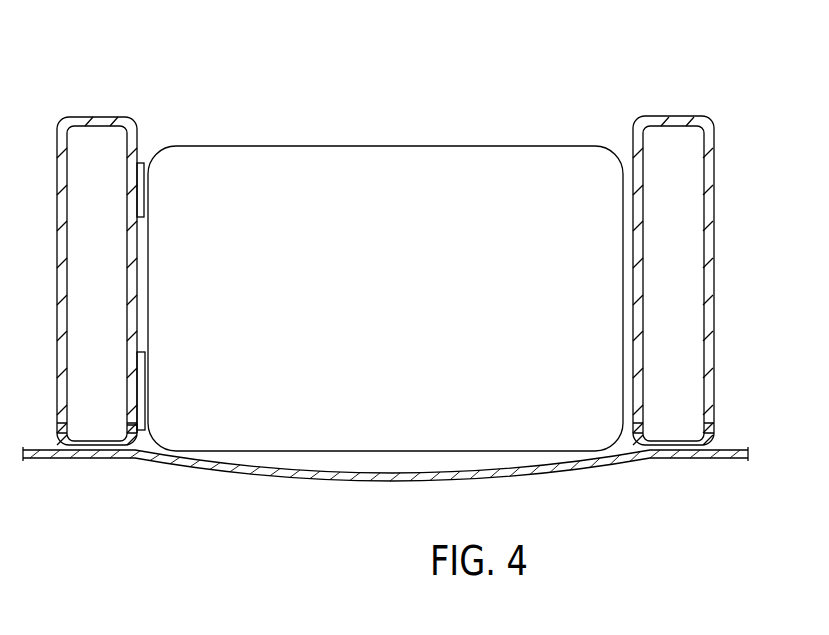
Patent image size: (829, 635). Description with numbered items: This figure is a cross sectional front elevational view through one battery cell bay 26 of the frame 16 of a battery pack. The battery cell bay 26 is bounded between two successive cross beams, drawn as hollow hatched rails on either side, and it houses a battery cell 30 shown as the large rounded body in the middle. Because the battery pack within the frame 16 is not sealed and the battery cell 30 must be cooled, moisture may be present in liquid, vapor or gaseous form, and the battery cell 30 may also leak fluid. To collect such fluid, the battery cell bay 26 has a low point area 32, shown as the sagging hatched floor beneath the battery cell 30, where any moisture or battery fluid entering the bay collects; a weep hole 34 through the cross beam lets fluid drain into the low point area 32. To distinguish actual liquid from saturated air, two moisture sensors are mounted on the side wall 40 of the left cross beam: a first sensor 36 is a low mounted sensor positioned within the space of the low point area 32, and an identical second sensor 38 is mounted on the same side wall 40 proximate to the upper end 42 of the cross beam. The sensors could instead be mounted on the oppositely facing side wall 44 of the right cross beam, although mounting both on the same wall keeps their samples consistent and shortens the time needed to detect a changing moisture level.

The frame 16 is at (504, 88).
The battery cell bay 26 is at (629, 223).
The battery cell 30 is at (408, 146).
The low point area 32 is at (335, 467).
The weep hole 34 is at (132, 428).
The first sensor 36 is at (145, 367).
The second sensor 38 is at (137, 200).
The side wall 40 is at (141, 152).
The upper end 42 is at (115, 120).
The side wall 44 is at (629, 148).